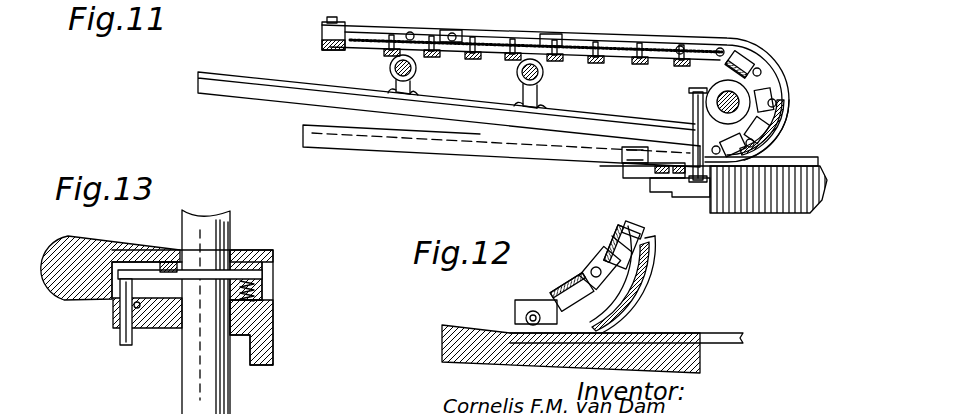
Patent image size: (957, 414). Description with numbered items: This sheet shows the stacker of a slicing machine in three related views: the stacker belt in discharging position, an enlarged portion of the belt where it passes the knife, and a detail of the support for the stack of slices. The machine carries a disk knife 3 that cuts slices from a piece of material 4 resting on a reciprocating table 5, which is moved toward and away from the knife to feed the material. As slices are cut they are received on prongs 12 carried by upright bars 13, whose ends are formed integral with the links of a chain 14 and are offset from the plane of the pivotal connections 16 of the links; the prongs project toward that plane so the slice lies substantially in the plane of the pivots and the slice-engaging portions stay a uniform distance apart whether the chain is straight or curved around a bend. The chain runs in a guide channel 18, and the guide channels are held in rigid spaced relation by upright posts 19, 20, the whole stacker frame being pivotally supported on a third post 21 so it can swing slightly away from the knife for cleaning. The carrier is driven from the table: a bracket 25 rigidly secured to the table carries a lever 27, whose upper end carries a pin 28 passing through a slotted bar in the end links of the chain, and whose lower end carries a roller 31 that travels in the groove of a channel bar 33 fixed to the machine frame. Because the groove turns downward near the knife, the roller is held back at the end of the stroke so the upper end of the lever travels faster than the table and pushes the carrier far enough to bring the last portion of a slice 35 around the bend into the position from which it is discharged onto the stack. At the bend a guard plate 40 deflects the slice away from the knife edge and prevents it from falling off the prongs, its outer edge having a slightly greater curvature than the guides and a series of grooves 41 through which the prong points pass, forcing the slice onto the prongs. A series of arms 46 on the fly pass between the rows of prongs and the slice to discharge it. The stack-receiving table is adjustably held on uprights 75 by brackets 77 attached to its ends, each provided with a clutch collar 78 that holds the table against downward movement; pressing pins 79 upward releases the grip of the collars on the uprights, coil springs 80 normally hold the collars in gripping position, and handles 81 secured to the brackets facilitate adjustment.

In FIG. 11, the disk knife 3 is at (802, 158).
In FIG. 12, the disk knife 3 is at (730, 333).
In FIG. 12, the material 4 is at (538, 362).
In FIG. 11, the reciprocating table 5 is at (757, 210).
In FIG. 11, the prongs 12 is at (395, 45).
In FIG. 12, the prongs 12 is at (597, 252).
In FIG. 11, the upright bars 13 is at (552, 60).
In FIG. 12, the upright bars 13 is at (590, 262).
In FIG. 11, the chain 14 is at (752, 60).
In FIG. 11, the pivotal connections 16 is at (446, 40).
In FIG. 12, the pivotal connections 16 is at (516, 312).
In FIG. 11, the guide channel 18 is at (268, 86).
In FIG. 11, the upright post 19 is at (542, 80).
In FIG. 11, the upright post 20 is at (716, 104).
In FIG. 11, the third post 21 is at (414, 73).
In FIG. 11, the bracket 25 is at (680, 195).
In FIG. 11, the lever 27 is at (640, 174).
In FIG. 11, the pin 28 is at (692, 119).
In FIG. 11, the roller 31 is at (626, 160).
In FIG. 11, the channel bar 33 is at (303, 125).
In FIG. 11, the slice 35 is at (478, 40).
In FIG. 12, the slice 35 is at (650, 306).
In FIG. 11, the guard plate 40 is at (782, 130).
In FIG. 12, the guard plate 40 is at (648, 288).
In FIG. 11, the grooves 41 is at (784, 107).
In FIG. 12, the grooves 41 is at (624, 236).
In FIG. 11, the arms 46 is at (447, 57).
In FIG. 13, the uprights 75 is at (212, 388).
In FIG. 13, the brackets 77 is at (158, 300).
In FIG. 13, the clutch collars 78 is at (170, 300).
In FIG. 13, the pins 79 is at (120, 336).
In FIG. 13, the coil springs 80 is at (258, 289).
In FIG. 13, the handles 81 is at (82, 252).